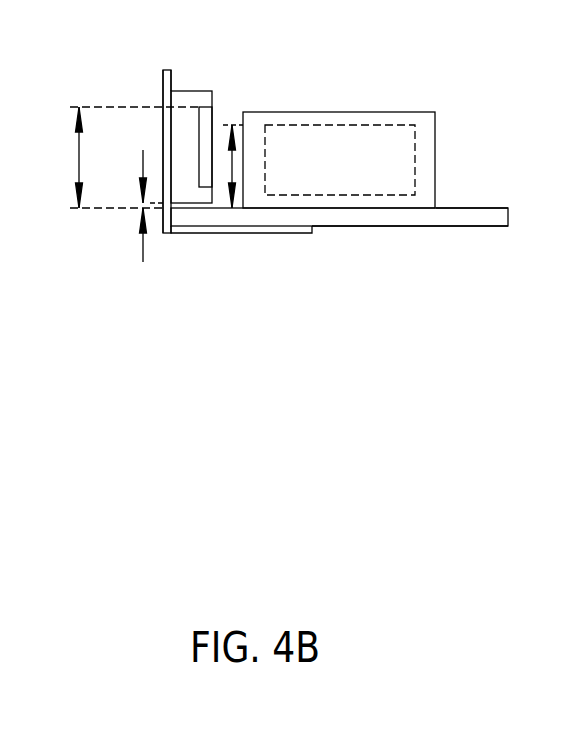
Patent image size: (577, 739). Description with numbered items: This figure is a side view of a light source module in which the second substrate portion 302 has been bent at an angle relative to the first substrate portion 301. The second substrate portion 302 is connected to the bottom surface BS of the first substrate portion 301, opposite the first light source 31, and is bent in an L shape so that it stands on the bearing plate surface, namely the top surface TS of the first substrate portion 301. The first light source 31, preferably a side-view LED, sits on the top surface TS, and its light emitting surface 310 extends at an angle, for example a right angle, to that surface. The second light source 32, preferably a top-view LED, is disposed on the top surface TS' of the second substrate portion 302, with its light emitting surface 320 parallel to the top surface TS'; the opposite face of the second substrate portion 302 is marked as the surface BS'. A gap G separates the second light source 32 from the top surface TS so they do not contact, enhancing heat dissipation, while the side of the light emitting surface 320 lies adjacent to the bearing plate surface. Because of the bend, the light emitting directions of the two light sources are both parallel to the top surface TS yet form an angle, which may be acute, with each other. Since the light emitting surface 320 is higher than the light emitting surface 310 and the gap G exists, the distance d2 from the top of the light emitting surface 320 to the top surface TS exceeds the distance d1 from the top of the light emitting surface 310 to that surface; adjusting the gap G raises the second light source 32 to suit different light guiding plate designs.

The first substrate portion 301 is at (502, 215).
The second substrate portion 302 is at (163, 78).
The second light source 32 is at (197, 90).
The light emitting surface of the second light source 320 is at (203, 115).
The first light source 31 is at (437, 152).
The light emitting surface of the first light source 310 is at (315, 145).
The top surface TS is at (490, 174).
The bottom surface BS is at (410, 250).
The top surface of the second substrate portion TS' is at (185, 59).
The back surface of side wall BS' is at (123, 143).
The distance d2 is at (121, 157).
The distance d1 is at (232, 167).
The gap G is at (143, 203).